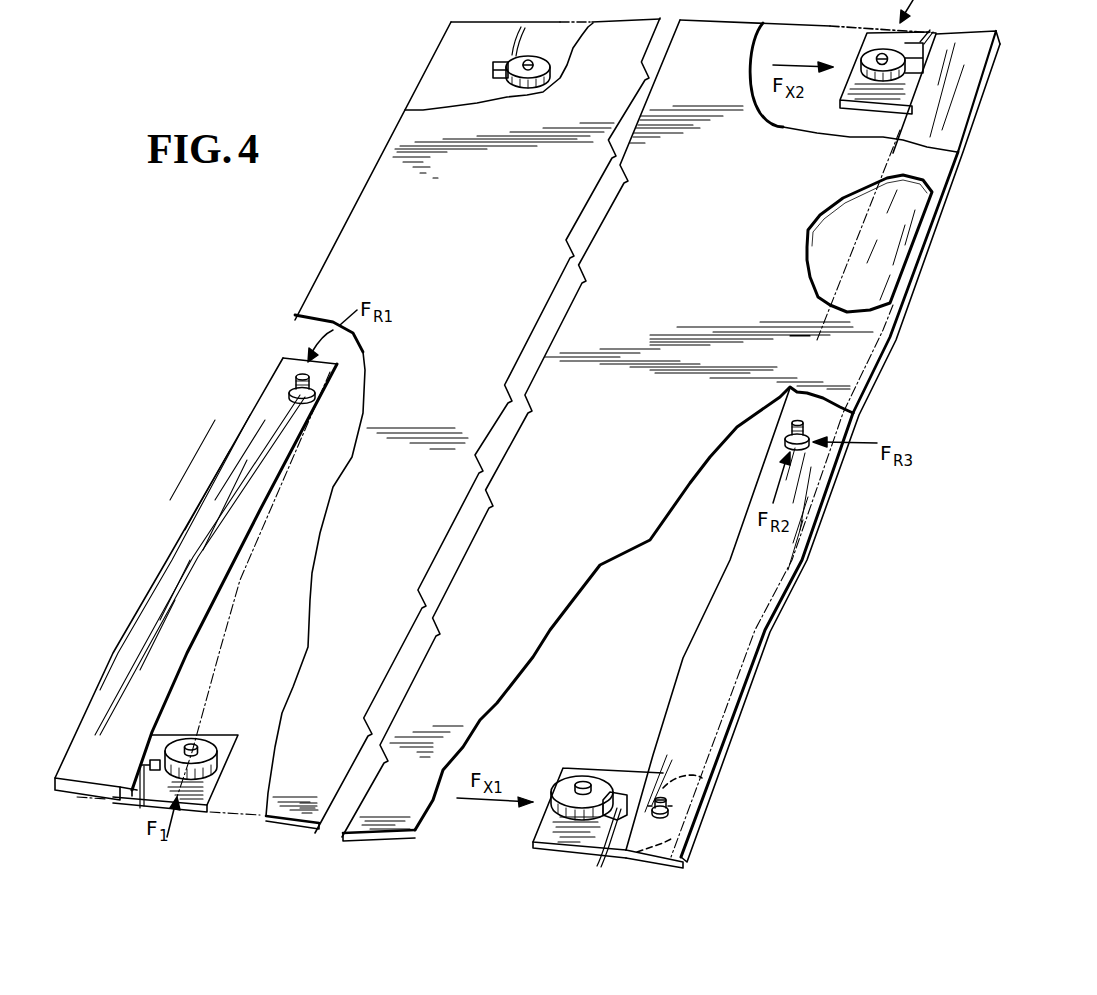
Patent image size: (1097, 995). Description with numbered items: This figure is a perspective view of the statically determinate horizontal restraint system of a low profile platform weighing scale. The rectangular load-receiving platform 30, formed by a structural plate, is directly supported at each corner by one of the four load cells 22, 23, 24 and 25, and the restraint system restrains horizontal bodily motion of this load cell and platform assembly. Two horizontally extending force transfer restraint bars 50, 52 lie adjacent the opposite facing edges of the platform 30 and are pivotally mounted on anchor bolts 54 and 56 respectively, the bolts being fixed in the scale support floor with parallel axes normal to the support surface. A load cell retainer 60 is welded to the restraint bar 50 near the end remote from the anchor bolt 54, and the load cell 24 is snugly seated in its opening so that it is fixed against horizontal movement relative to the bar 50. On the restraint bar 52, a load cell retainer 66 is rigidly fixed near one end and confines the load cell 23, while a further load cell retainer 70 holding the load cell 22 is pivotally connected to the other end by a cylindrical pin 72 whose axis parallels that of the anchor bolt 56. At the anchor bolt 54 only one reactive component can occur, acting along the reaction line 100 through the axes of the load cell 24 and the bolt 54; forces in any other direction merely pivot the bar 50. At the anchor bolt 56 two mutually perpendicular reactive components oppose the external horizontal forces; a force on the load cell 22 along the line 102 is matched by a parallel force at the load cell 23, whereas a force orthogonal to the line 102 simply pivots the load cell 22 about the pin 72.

The load cell 22 is at (574, 769).
The load cell 23 is at (867, 57).
The load cell 24 is at (217, 759).
The load cell 25 is at (548, 58).
The load-receiving platform 30 is at (500, 211).
The restraint bar 50 is at (190, 547).
The restraint bar 52 is at (765, 600).
The anchor bolt 54 is at (295, 383).
The anchor bolt 56 is at (793, 423).
The load cell retainer 60 is at (240, 735).
The load cell retainer 66 is at (838, 103).
The load cell retainer 70 is at (620, 772).
The cylindrical pin 72 is at (668, 803).
The reaction line 100 is at (217, 678).
The line 102 is at (478, 800).